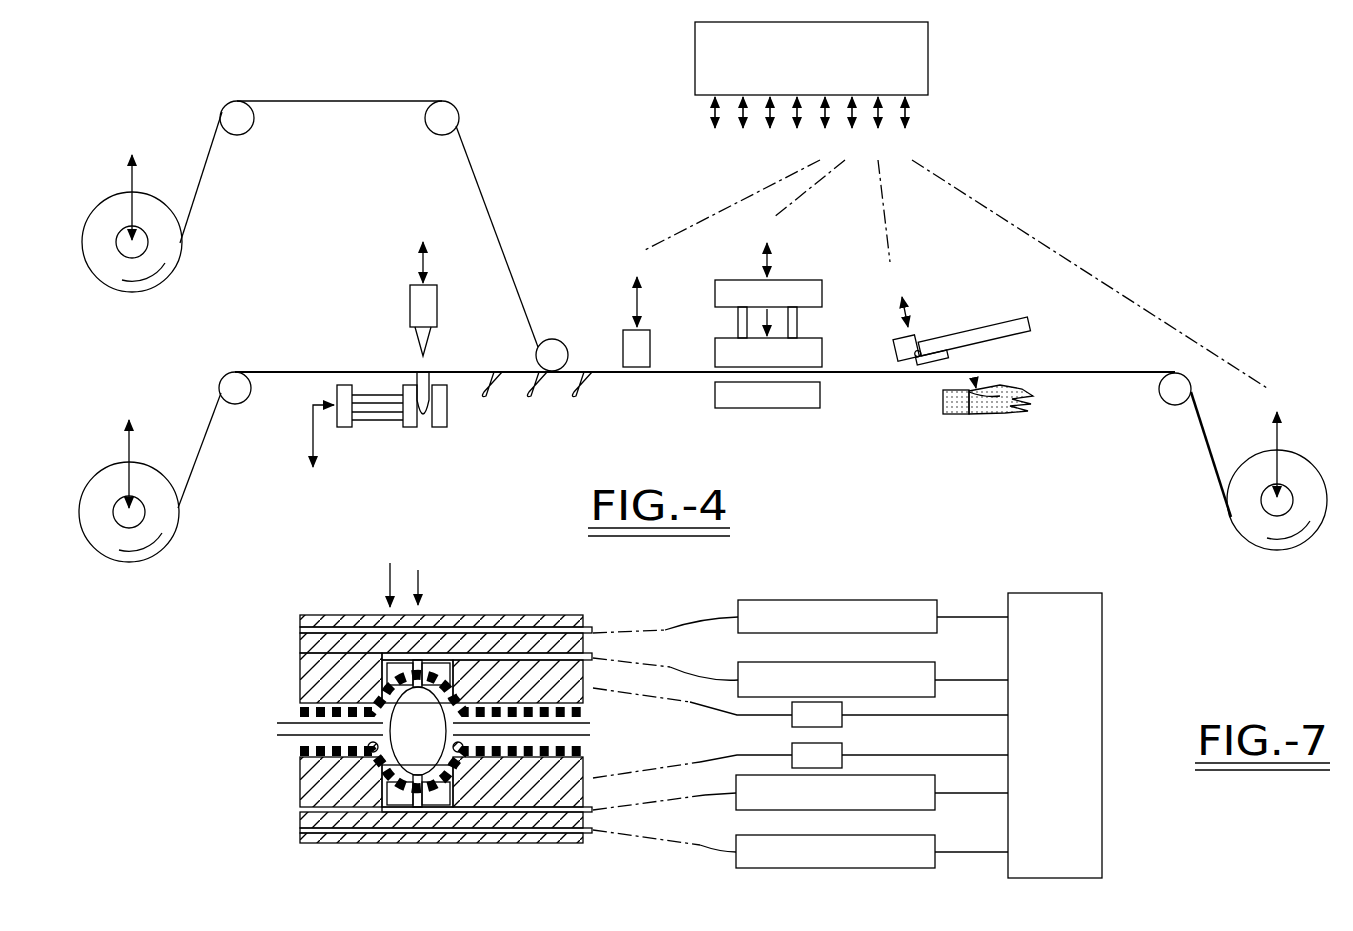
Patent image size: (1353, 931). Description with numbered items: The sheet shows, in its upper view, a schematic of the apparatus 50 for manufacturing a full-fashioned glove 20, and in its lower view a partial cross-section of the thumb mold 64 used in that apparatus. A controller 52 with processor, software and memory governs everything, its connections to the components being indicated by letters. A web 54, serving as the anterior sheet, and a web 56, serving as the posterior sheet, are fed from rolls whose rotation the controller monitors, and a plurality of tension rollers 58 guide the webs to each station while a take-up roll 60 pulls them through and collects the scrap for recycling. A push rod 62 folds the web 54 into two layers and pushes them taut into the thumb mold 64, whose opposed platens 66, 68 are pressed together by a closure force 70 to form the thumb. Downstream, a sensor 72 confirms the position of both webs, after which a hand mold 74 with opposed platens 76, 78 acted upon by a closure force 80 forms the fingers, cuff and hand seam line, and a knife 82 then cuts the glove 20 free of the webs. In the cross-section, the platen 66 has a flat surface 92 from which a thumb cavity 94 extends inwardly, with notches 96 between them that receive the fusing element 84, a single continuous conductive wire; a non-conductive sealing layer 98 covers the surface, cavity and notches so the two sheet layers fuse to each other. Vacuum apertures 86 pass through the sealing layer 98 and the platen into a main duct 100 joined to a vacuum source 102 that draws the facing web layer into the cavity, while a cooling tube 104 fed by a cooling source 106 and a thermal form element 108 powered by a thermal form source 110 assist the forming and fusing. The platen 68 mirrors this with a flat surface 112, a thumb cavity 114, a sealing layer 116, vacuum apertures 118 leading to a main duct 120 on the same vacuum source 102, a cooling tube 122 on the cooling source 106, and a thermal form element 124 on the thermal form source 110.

In FIG. 4, the full-fashioned glove 20 is at (963, 420).
In FIG. 4, the apparatus 50 is at (1140, 185).
In FIG. 4, the controller 52 is at (928, 58).
In FIG. 7, the controller 52 is at (1102, 660).
In FIG. 4, the web 54 is at (197, 478).
In FIG. 7, the web 54 is at (277, 723).
In FIG. 4, the web 56 is at (198, 190).
In FIG. 4, the tension rollers 58 is at (250, 130).
In FIG. 4, the take-up roll 60 is at (1240, 540).
In FIG. 4, the push rod 62 is at (410, 342).
In FIG. 4, the thumb mold 64 is at (430, 436).
In FIG. 7, the thumb mold 64 is at (418, 605).
In FIG. 4, the platen 66 is at (447, 428).
In FIG. 7, the platen 66 is at (310, 805).
In FIG. 4, the platen 68 is at (416, 430).
In FIG. 7, the platen 68 is at (303, 660).
In FIG. 4, the closure force 70 is at (313, 447).
In FIG. 7, the closure force 70 is at (390, 572).
In FIG. 4, the sensor 72 is at (650, 347).
In FIG. 4, the hand mold 74 is at (830, 275).
In FIG. 4, the platen 76 is at (777, 408).
In FIG. 4, the platen 78 is at (822, 352).
In FIG. 4, the closure force 80 is at (775, 324).
In FIG. 4, the knife 82 is at (990, 320).
In FIG. 7, the fusing element 84 is at (465, 752).
In FIG. 7, the vacuum apertures 86 is at (376, 800).
In FIG. 7, the flat surface 92 is at (300, 752).
In FIG. 7, the thumb cavity 94 is at (400, 785).
In FIG. 7, the notches 96 is at (355, 762).
In FIG. 7, the sealing layer 98 is at (596, 745).
In FIG. 7, the main duct 100 is at (530, 812).
In FIG. 7, the vacuum source 102 is at (915, 662).
In FIG. 7, the cooling tube 104 is at (550, 834).
In FIG. 7, the cooling source 106 is at (912, 600).
In FIG. 7, the thermal form element 108 is at (596, 790).
In FIG. 7, the thermal form source 110 is at (842, 722).
In FIG. 7, the flat surface 112 is at (308, 712).
In FIG. 7, the thumb cavity 114 is at (420, 690).
In FIG. 7, the sealing layer 116 is at (598, 708).
In FIG. 7, the vacuum apertures 118 is at (380, 663).
In FIG. 7, the main duct 120 is at (520, 658).
In FIG. 7, the cooling tube 122 is at (548, 630).
In FIG. 7, the thermal form element 124 is at (596, 675).